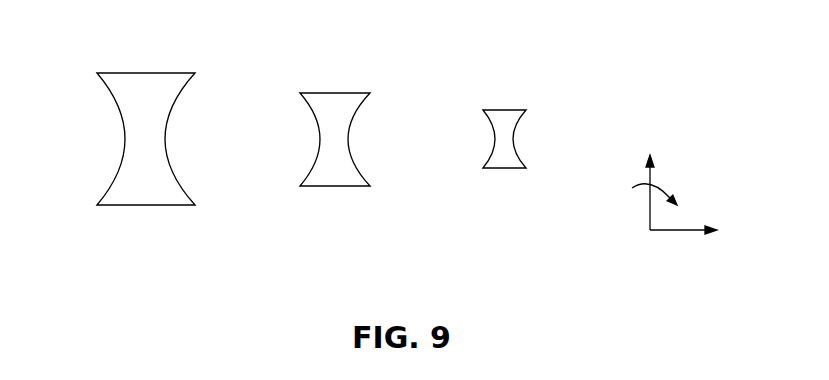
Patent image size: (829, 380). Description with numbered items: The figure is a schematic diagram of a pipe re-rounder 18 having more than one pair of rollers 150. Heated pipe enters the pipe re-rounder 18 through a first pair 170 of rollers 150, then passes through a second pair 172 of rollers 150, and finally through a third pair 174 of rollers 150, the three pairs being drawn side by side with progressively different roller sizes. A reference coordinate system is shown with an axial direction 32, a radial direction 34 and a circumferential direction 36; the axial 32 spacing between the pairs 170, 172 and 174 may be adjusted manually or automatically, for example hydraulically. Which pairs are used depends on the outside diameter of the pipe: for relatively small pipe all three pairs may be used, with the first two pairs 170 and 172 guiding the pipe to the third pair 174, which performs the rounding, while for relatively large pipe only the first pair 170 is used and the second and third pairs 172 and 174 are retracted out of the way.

The pipe re-rounder 18 is at (651, 162).
The axial axis or direction 32 is at (678, 232).
The radial axis or direction 34 is at (650, 207).
The circumferential axis or direction 36 is at (660, 184).
The rollers 150 is at (294, 141).
The first pair of rollers 170 is at (134, 32).
The second pair of rollers 172 is at (316, 44).
The third pair of rollers 174 is at (486, 64).